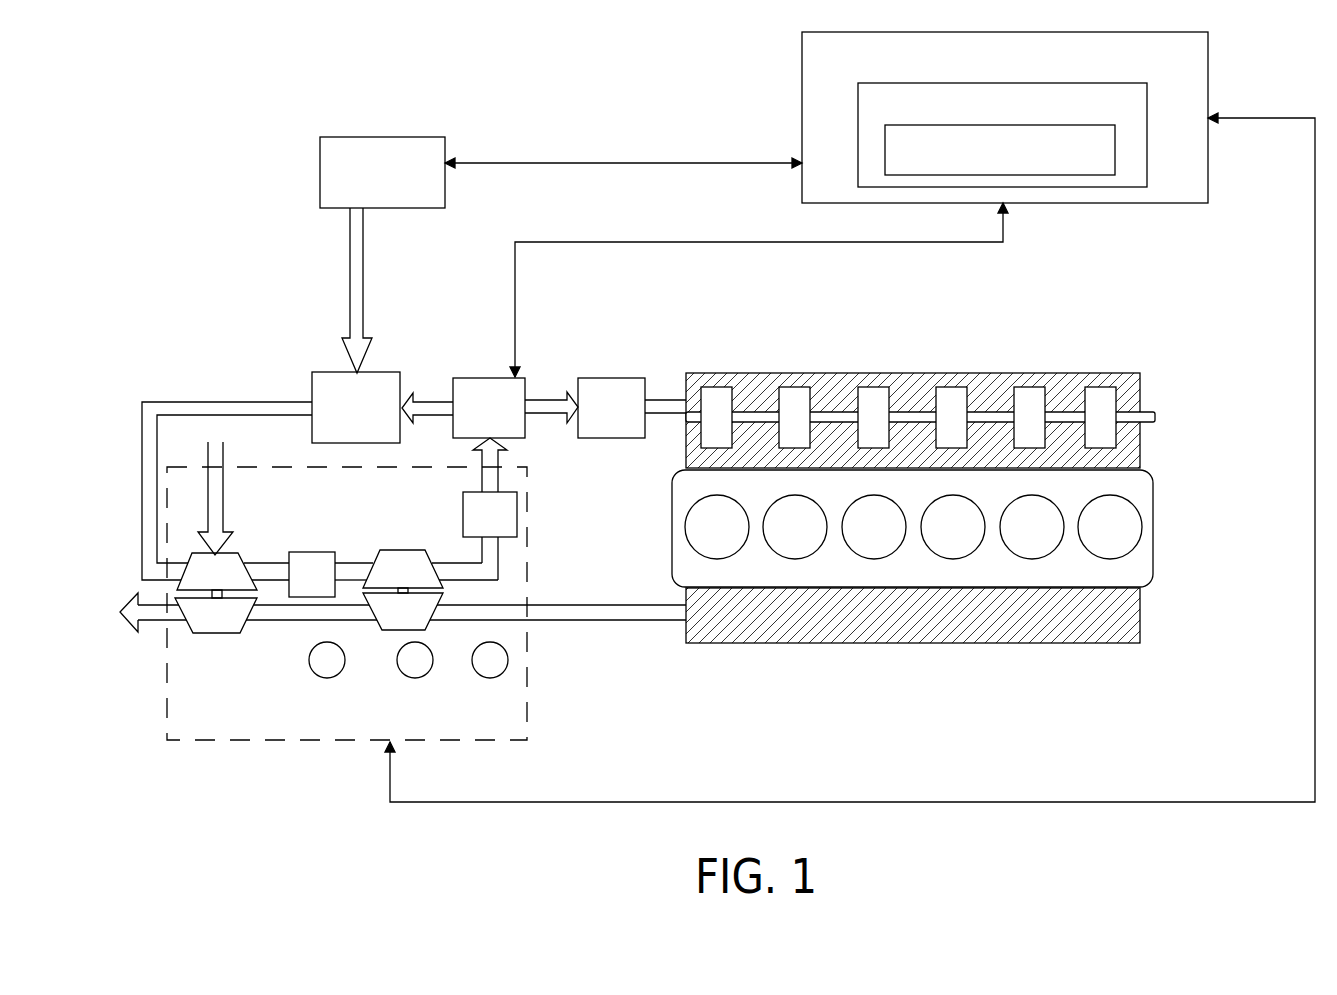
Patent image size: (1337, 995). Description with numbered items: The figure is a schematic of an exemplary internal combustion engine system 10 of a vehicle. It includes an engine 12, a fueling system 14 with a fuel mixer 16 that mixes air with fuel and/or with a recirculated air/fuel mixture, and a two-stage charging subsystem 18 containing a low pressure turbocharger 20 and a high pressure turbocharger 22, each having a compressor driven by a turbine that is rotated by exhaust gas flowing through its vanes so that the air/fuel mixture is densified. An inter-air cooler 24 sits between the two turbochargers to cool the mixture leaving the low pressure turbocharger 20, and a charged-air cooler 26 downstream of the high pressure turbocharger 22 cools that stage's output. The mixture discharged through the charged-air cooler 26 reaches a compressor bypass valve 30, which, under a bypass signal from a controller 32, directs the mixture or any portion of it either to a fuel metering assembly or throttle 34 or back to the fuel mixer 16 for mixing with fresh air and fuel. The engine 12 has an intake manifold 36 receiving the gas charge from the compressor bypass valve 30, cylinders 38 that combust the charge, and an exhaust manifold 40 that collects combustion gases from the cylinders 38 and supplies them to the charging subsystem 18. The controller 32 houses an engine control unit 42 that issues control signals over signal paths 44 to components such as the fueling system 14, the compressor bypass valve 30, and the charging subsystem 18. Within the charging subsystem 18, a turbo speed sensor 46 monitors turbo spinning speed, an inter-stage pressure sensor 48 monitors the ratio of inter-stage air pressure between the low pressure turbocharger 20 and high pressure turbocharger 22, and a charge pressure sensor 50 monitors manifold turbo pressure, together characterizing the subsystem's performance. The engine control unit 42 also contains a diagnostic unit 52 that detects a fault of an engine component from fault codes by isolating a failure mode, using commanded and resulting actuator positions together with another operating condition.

The internal combustion engine system 10 is at (240, 194).
The engine 12 is at (912, 470).
The fueling system 14 is at (387, 137).
The fuel mixer 16 is at (312, 381).
The charging subsystem 18 is at (245, 762).
The low pressure turbocharger 20 is at (246, 553).
The high pressure turbocharger 22 is at (404, 550).
The inter-air cooler 24 is at (314, 552).
The charged-air cooler 26 is at (517, 515).
The compressor bypass valve 30 is at (490, 378).
The controller 32 is at (802, 115).
The fuel metering assembly or throttle 34 is at (614, 378).
The intake manifold 36 is at (922, 373).
The cylinders 38 is at (1027, 560).
The exhaust manifold 40 is at (828, 643).
The engine control unit 42 is at (858, 128).
The signal paths 44 is at (593, 161).
The turbo speed sensor 46 is at (313, 672).
The inter-stage pressure sensor 48 is at (401, 672).
The charge pressure sensor 50 is at (476, 672).
The diagnostic unit 52 is at (1052, 125).